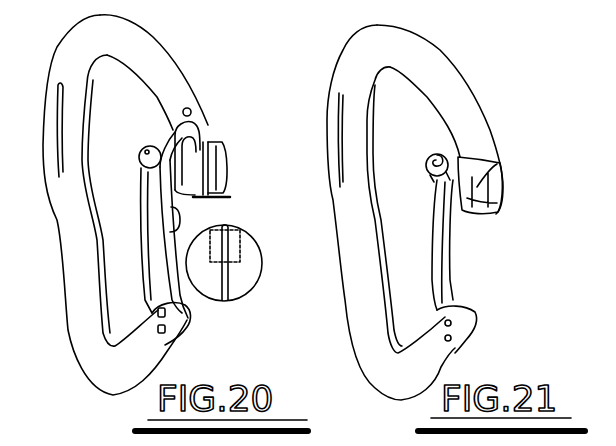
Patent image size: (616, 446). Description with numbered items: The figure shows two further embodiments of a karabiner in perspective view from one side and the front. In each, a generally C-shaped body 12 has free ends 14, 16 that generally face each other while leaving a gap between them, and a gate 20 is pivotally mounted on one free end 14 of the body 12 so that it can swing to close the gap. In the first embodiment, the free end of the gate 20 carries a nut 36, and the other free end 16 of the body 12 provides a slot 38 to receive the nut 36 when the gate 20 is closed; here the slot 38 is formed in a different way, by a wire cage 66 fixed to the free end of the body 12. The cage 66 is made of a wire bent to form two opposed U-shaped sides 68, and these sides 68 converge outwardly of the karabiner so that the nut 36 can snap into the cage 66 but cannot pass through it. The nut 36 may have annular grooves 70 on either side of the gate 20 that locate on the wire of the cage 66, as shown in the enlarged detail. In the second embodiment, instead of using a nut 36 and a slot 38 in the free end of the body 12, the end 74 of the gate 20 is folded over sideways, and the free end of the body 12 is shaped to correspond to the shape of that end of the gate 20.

In FIG. 20, the body 12 is at (62, 226).
In FIG. 21, the body 12 is at (345, 101).
In FIG. 20, the free end 14 is at (170, 330).
In FIG. 20, the free end 16 is at (197, 114).
In FIG. 20, the gate 20 is at (165, 230).
In FIG. 21, the gate 20 is at (451, 260).
In FIG. 20, the nut 36 is at (147, 152).
In FIG. 21, the slot 38 is at (498, 164).
In FIG. 20, the wire cage 66 is at (212, 147).
In FIG. 20, the U-shaped sides 68 is at (228, 182).
In FIG. 20, the annular grooves 70 is at (252, 255).
In FIG. 21, the end 74 is at (460, 157).